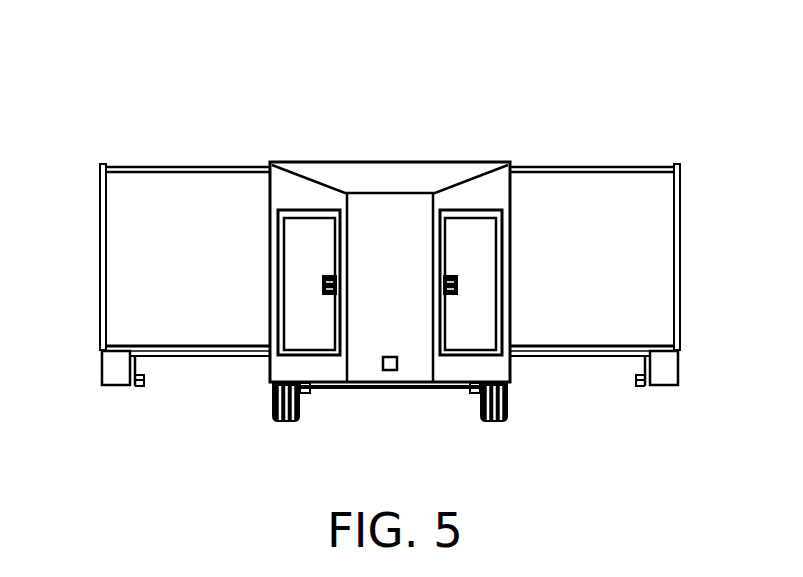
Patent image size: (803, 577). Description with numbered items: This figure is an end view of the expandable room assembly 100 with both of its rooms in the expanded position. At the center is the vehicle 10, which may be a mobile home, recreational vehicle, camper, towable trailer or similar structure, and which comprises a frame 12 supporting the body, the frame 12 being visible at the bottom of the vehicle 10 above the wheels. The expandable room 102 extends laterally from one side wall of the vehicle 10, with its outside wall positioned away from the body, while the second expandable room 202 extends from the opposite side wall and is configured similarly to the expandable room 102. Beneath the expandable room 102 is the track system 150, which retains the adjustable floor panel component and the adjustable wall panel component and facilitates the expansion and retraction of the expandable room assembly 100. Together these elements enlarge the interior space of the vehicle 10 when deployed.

The expandable room assembly 100 is at (545, 142).
The vehicle 10 is at (385, 158).
The frame 12 is at (393, 390).
The expandable room 102 is at (160, 160).
The second expandable room 202 is at (613, 158).
The track system 150 is at (100, 365).